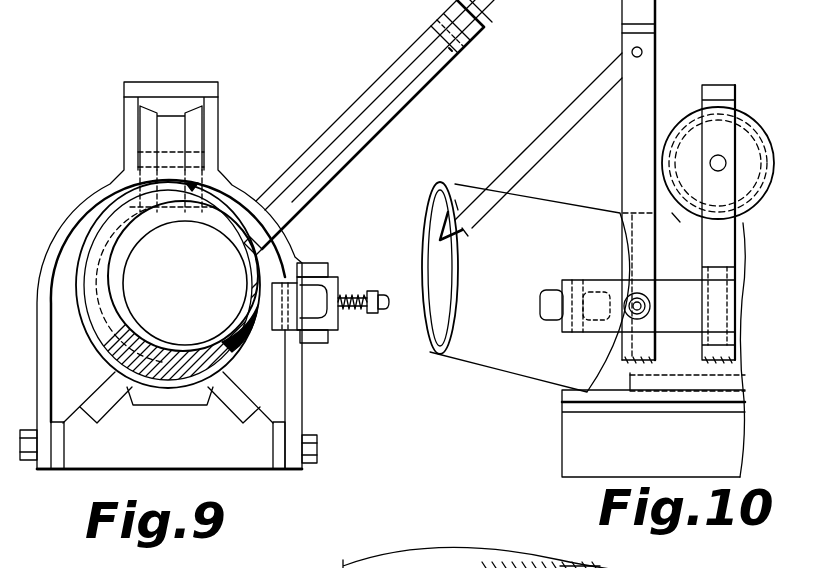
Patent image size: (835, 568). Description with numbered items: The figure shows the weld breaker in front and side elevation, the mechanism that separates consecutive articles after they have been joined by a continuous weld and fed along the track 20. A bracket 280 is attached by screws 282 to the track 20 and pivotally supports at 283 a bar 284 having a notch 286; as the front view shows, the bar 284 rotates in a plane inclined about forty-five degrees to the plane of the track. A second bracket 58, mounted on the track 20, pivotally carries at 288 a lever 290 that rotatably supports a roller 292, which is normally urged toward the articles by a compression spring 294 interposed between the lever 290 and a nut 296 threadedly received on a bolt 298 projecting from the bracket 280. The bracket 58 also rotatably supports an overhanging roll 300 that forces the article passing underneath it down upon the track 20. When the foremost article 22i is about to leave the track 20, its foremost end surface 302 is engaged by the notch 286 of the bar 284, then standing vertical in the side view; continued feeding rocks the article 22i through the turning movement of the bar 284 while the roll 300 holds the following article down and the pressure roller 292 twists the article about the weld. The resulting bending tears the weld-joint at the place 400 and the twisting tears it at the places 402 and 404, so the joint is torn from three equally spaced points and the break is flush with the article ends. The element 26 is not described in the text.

In FIG. 9, the track 20 is at (257, 462).
In FIG. 10, the track 20 is at (575, 405).
In FIG. 9, the foremost article 22i is at (135, 343).
In FIG. 10, the foremost article 22i is at (569, 214).
In FIG. 9, the lever arm end 26 is at (486, 28).
In FIG. 10, the lever arm end 26 is at (650, 15).
In FIG. 10, the bracket 58 is at (718, 103).
In FIG. 9, the bracket 280 is at (295, 383).
In FIG. 10, the bracket 280 is at (654, 78).
In FIG. 9, the screws 282 is at (26, 460).
In FIG. 9, the pivot 283 is at (452, 50).
In FIG. 10, the pivot 283 is at (632, 52).
In FIG. 9, the bar 284 is at (376, 108).
In FIG. 10, the bar 284 is at (538, 147).
In FIG. 10, the notch 286 is at (466, 232).
In FIG. 10, the pivot 288 is at (717, 307).
In FIG. 10, the lever 290 is at (607, 280).
In FIG. 9, the roller 292 is at (307, 292).
In FIG. 10, the roller 292 is at (543, 305).
In FIG. 9, the compression spring 294 is at (360, 292).
In FIG. 9, the nut 296 is at (383, 296).
In FIG. 10, the nut 296 is at (648, 296).
In FIG. 9, the bolt 298 is at (348, 292).
In FIG. 9, the roll 300 is at (190, 137).
In FIG. 10, the roll 300 is at (678, 208).
In FIG. 10, the foremost end surface 302 is at (455, 202).
In FIG. 10, the tearing place 400 is at (640, 567).
In FIG. 10, the tearing place 402 is at (507, 567).
In FIG. 10, the tearing place 404 is at (563, 567).